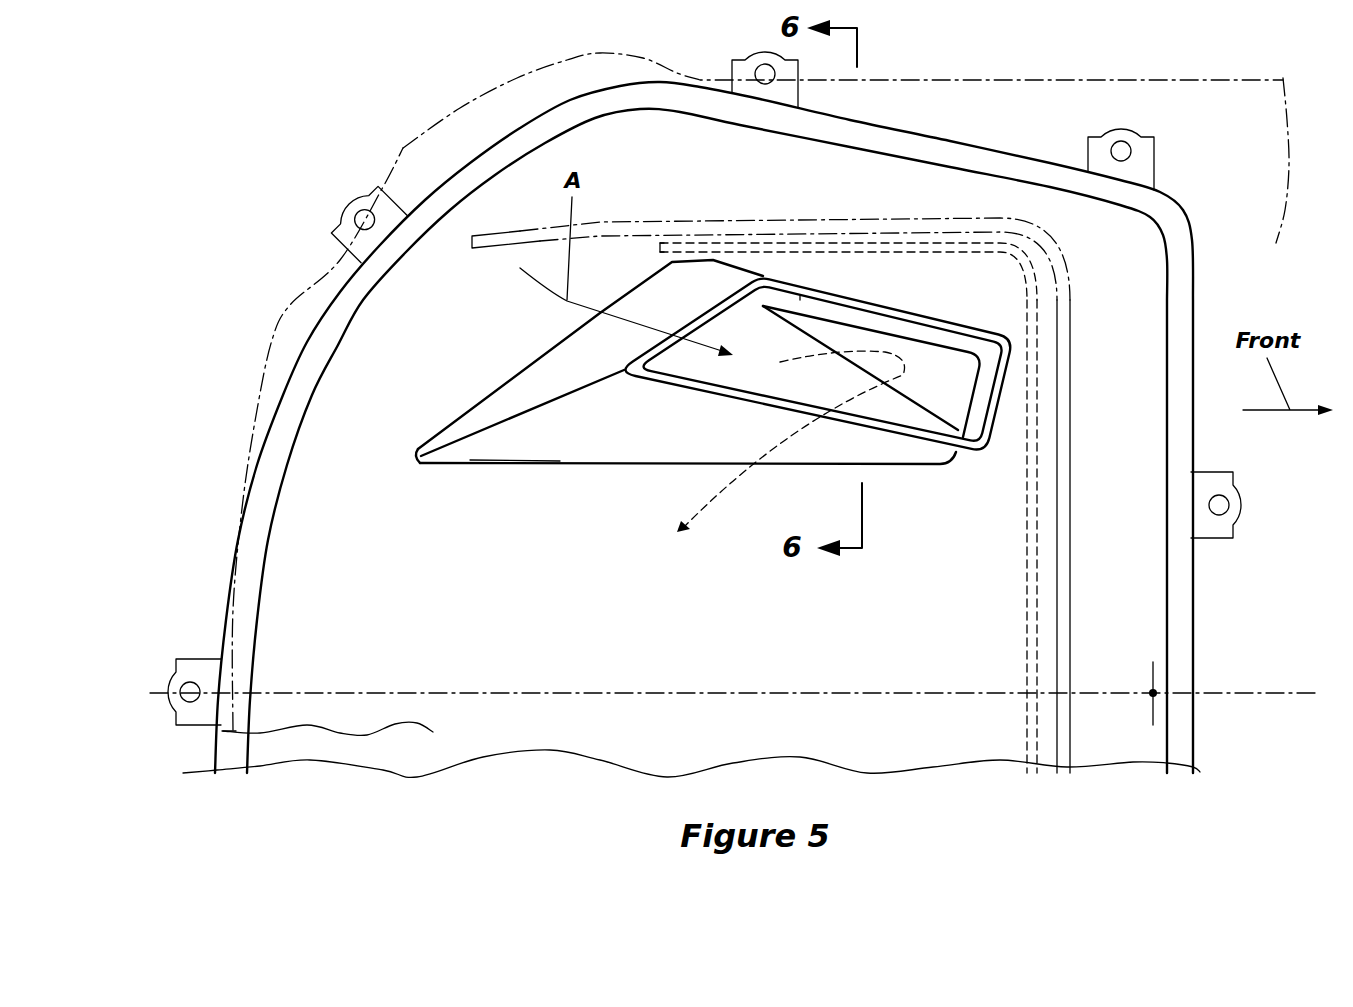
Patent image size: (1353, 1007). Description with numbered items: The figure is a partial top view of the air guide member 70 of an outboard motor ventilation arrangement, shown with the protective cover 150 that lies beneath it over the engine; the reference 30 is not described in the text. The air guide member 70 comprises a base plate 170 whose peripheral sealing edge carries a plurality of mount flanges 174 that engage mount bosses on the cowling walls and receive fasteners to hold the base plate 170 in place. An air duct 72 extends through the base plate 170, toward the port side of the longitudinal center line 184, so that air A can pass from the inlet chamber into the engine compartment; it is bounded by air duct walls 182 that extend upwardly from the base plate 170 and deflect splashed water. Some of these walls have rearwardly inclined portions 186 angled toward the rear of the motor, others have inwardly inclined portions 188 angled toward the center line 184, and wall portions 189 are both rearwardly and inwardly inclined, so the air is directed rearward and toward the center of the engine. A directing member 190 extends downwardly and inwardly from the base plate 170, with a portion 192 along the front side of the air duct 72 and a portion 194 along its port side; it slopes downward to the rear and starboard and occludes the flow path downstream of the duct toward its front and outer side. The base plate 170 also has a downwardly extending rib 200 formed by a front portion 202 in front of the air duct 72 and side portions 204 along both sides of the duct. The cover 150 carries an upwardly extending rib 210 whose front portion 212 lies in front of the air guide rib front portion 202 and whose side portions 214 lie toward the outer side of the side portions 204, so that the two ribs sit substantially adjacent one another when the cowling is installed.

The door assembly 30 is at (252, 189).
The air guide member 70 is at (296, 337).
The air duct 72 is at (737, 377).
The protective cover 150 is at (445, 101).
The base plate 170 is at (333, 447).
The mount flanges 174 is at (1125, 148).
The air duct walls 182 is at (669, 333).
The longitudinal center line 184 is at (1270, 693).
The rearwardly inclined portions 186 is at (523, 380).
The inwardly inclined portions 188 is at (593, 450).
The wall portions 189 is at (557, 443).
The directing member 190 is at (930, 393).
The portion of directing member 192 is at (960, 370).
The portion of directing member 194 is at (823, 330).
The downwardly extending rib 200 is at (1010, 573).
The front portion of rib 202 is at (1038, 510).
The side portions of rib 204 is at (915, 243).
The upwardly extending rib 210 is at (1085, 573).
The front portion of cover rib 212 is at (1072, 430).
The side portions of cover rib 214 is at (827, 218).